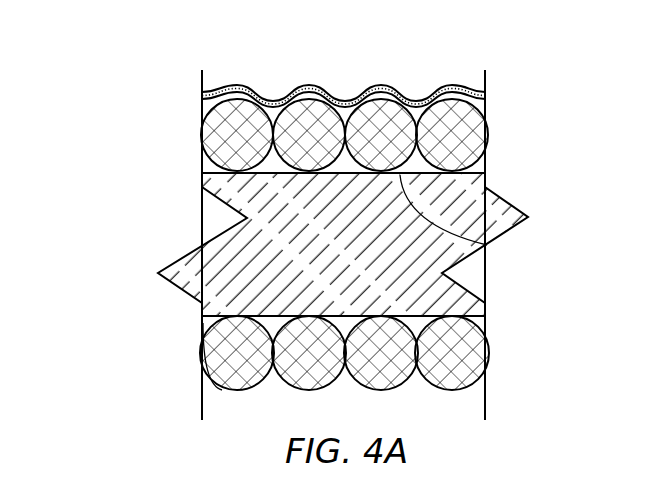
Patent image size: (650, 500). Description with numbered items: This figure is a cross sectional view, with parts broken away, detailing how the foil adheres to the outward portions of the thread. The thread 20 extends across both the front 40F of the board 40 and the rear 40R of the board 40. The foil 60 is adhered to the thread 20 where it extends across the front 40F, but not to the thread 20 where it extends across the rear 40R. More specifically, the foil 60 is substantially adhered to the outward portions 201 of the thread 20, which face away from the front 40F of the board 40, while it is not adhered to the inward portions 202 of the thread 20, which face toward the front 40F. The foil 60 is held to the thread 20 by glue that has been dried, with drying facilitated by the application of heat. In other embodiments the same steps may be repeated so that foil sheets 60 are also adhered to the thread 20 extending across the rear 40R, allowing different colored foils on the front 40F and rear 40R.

The thread 20 is at (382, 93).
The foil sheet 60 is at (212, 90).
The outward portions of the thread 201 is at (397, 92).
The inward portions of the thread 202 is at (487, 245).
The board 40 is at (118, 283).
The front of the board 40F is at (475, 173).
The rear of the board 40R is at (203, 323).